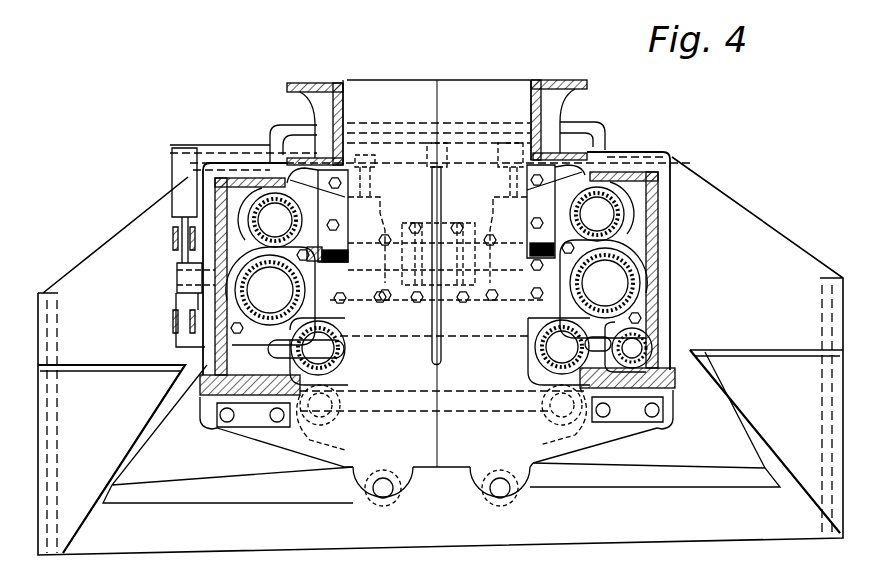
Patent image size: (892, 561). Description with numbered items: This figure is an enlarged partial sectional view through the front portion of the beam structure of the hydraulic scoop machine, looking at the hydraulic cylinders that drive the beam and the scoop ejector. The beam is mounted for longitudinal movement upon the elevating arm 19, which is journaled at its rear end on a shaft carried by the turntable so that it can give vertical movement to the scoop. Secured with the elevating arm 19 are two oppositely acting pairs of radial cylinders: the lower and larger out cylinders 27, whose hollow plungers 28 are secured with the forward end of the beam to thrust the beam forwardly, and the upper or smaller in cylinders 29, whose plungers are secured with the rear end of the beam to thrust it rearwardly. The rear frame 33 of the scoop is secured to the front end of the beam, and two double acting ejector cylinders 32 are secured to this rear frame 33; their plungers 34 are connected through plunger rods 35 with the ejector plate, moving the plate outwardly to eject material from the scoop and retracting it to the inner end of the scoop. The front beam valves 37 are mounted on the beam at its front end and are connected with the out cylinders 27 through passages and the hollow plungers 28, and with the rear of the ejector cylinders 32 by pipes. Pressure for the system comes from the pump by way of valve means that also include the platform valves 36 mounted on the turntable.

The elevating arm 19 is at (478, 77).
The out cylinders 27 is at (640, 291).
The plungers 28 is at (630, 302).
The in cylinders 29 is at (262, 223).
The ejector cylinders 32 is at (335, 378).
The rear frame 33 is at (440, 317).
The plungers 34 is at (328, 349).
The plunger rods 35 is at (540, 292).
The platform valves 36 is at (548, 345).
The front beam valves 37 is at (417, 305).